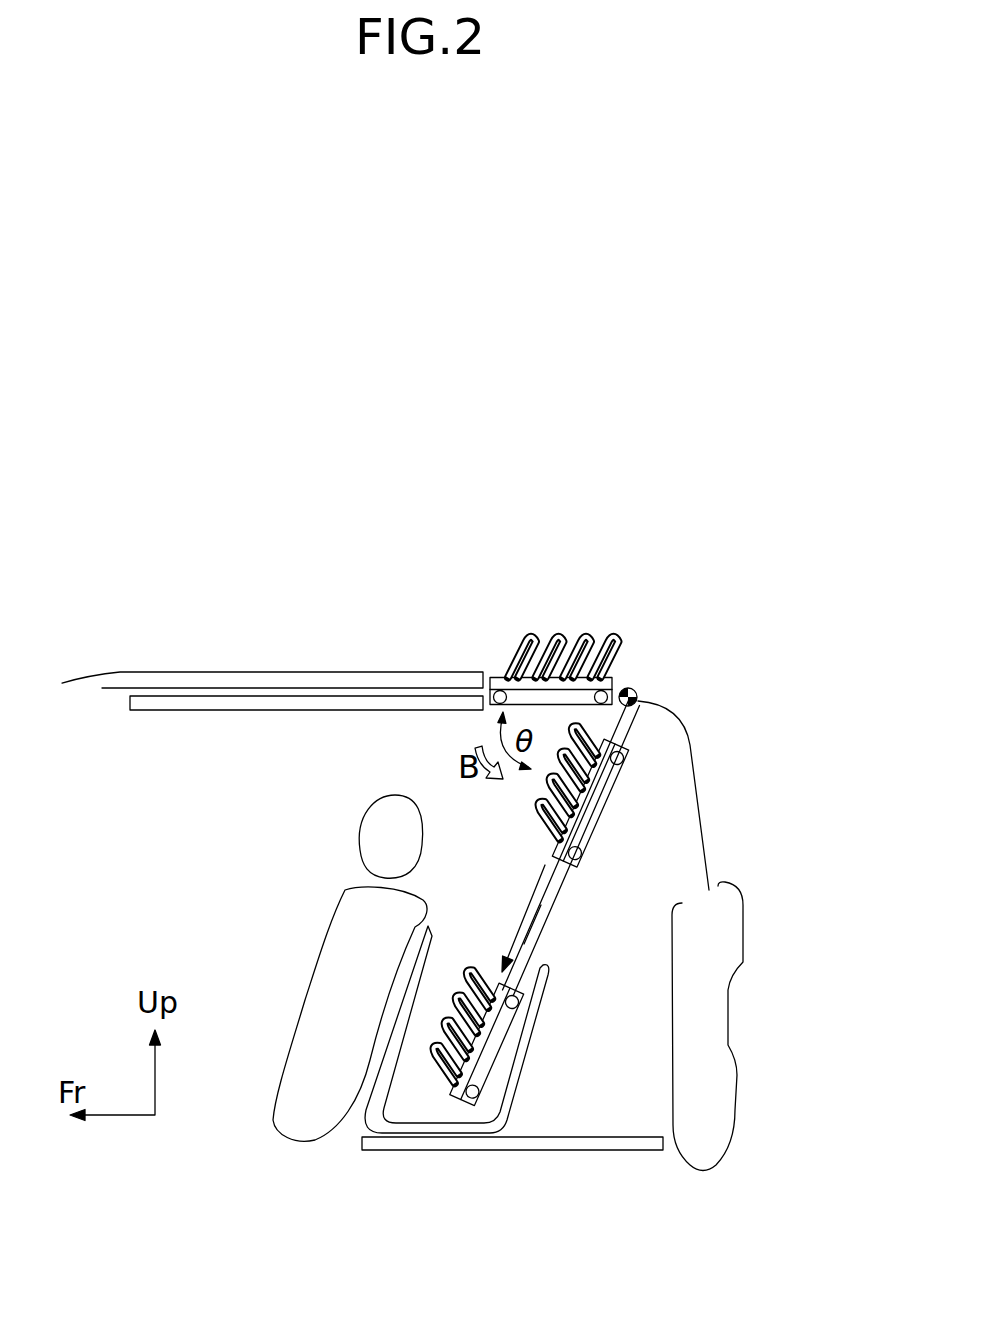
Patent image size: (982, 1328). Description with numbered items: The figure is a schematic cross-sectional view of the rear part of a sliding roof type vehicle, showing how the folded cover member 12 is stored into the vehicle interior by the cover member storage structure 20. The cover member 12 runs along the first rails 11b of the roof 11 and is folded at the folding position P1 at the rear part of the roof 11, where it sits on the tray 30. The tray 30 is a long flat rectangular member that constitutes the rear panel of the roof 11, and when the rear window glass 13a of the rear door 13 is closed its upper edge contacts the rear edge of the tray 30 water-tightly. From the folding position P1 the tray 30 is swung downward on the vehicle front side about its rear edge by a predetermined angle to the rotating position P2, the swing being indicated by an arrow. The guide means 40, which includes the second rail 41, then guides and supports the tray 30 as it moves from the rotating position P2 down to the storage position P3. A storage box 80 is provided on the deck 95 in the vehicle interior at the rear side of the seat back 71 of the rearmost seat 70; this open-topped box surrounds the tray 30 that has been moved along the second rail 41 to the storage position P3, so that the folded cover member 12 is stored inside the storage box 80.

The roof 11 is at (114, 673).
The first rails 11b is at (175, 697).
The cover member 12 is at (564, 605).
The cover member storage structure 20 is at (606, 607).
The tray 30 is at (622, 677).
The rear door 13 is at (755, 1088).
The rear window glass 13a is at (697, 771).
The guide means 40 is at (661, 876).
The second rail 41 is at (550, 940).
The rearmost seat 70 is at (316, 968).
The seat back 71 is at (302, 1057).
The storage box 80 is at (562, 1014).
The deck 95 is at (563, 1137).
The folding position P1 is at (555, 618).
The rotating position P2 is at (594, 810).
The storage position P3 is at (490, 1059).